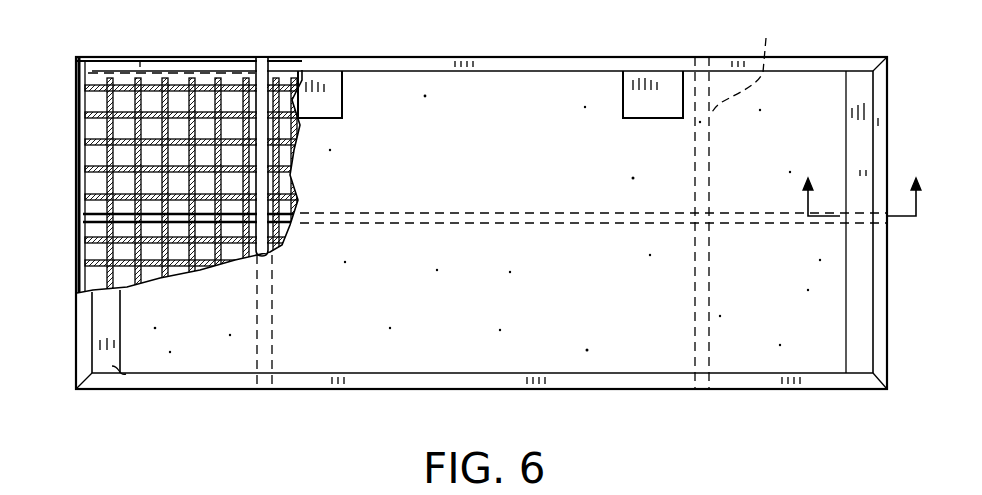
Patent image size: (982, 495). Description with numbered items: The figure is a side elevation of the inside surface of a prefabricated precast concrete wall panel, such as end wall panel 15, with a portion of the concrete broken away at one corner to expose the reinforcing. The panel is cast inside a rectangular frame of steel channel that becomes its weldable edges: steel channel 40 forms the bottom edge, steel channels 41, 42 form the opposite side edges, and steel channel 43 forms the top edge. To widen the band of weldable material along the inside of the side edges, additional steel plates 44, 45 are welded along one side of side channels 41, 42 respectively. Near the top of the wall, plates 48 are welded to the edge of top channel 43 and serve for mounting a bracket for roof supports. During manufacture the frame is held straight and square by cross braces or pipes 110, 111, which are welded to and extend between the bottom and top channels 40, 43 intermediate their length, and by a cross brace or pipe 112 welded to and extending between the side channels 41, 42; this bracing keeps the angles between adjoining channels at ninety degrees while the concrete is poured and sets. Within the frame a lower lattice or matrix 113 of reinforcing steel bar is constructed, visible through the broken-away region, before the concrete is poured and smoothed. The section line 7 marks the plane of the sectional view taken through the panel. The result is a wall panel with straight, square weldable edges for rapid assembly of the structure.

The section line 7- 7 is at (862, 194).
The end wall panel 15 is at (426, 58).
The steel channel 40 is at (640, 390).
The steel channel 41 is at (75, 337).
The steel channel 42 is at (875, 353).
The steel channel 43 is at (531, 57).
The steel plate 44 is at (120, 378).
The steel plate 45 is at (858, 298).
The plate 48 is at (332, 78).
The cross brace 110 is at (255, 58).
The cross brace 111 is at (759, 65).
The cross brace 112 is at (78, 211).
The lower lattice 113 is at (132, 80).